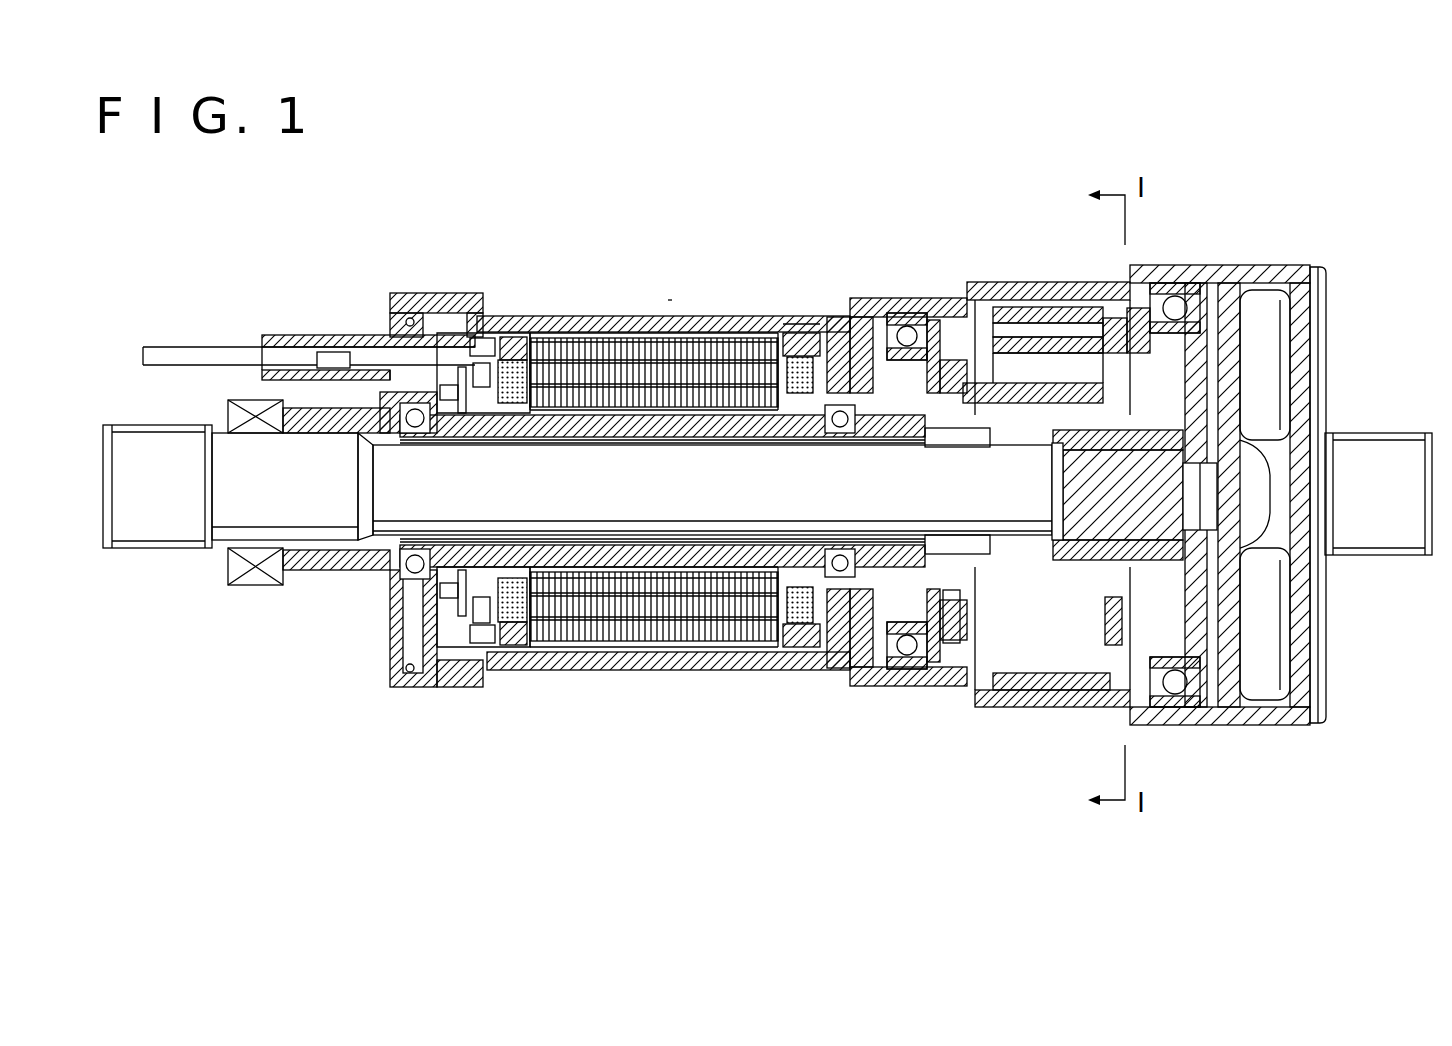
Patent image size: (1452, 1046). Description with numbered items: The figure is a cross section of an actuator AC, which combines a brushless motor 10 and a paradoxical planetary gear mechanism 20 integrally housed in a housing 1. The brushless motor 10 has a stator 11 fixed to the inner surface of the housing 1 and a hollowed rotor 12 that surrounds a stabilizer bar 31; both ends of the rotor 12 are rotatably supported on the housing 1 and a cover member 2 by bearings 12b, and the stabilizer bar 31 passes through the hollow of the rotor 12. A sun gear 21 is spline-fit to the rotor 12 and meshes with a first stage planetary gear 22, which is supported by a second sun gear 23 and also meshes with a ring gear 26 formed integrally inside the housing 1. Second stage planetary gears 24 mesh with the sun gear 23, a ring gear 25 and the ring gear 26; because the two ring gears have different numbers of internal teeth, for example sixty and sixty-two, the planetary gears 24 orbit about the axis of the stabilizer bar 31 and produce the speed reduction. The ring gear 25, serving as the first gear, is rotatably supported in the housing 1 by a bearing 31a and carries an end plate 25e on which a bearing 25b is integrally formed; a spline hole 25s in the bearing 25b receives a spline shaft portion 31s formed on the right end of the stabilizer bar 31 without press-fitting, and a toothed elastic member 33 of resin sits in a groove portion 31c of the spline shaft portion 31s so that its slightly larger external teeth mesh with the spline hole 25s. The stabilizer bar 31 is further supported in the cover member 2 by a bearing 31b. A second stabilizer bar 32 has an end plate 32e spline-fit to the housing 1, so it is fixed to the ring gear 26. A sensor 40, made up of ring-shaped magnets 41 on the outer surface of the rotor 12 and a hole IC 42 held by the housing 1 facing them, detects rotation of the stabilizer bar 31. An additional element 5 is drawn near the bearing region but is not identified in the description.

The housing 1 is at (806, 652).
The cover member 2 is at (398, 589).
The bearing 5 is at (1156, 707).
The brushless motor 10 is at (634, 678).
The stator 11 is at (600, 340).
The rotor 12 is at (453, 557).
The bearings 12b is at (390, 385).
The paradoxical planetary gear mechanism 20 is at (1014, 616).
The sun gear 21 is at (828, 330).
The first stage planetary gear 22 is at (871, 322).
The sun gear 23 is at (962, 360).
The planetary gears 24 is at (1005, 338).
The ring gear 25 is at (1048, 315).
The end plate 25e is at (1198, 338).
The bearing 25b is at (1081, 563).
The spline hole 25s is at (1050, 545).
The ring gear 26 is at (915, 345).
The stabilizer bar 31 is at (225, 538).
The bearing 31a is at (1217, 728).
The bearing 31b is at (307, 568).
The groove portion 31c is at (985, 625).
The spline shaft portion 31s is at (1100, 563).
The stabilizer bar 32 is at (1377, 445).
The end plate 32e is at (1243, 352).
The toothed elastic member 33 is at (1197, 385).
The sensor 40 is at (490, 637).
The magnet 41 is at (477, 590).
The hole IC 42 is at (447, 597).
The actuator AC is at (669, 293).